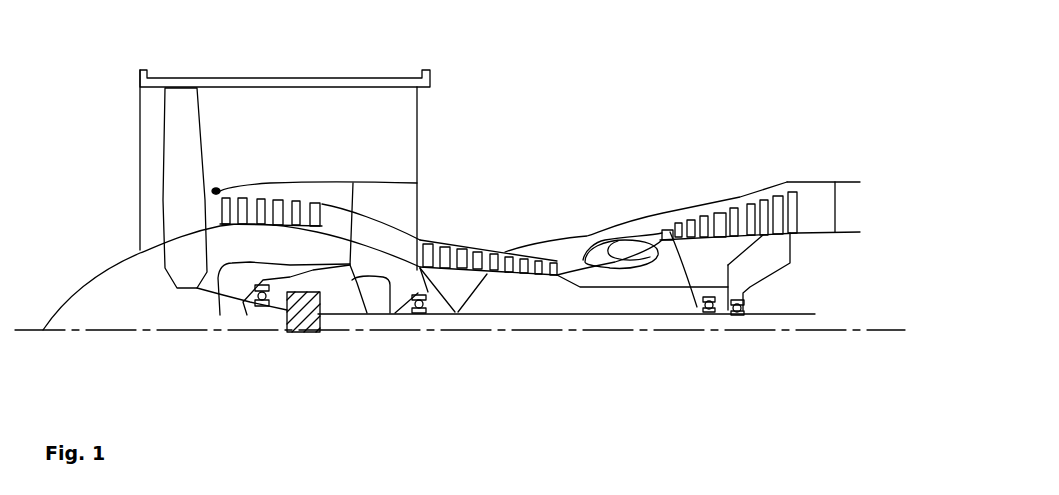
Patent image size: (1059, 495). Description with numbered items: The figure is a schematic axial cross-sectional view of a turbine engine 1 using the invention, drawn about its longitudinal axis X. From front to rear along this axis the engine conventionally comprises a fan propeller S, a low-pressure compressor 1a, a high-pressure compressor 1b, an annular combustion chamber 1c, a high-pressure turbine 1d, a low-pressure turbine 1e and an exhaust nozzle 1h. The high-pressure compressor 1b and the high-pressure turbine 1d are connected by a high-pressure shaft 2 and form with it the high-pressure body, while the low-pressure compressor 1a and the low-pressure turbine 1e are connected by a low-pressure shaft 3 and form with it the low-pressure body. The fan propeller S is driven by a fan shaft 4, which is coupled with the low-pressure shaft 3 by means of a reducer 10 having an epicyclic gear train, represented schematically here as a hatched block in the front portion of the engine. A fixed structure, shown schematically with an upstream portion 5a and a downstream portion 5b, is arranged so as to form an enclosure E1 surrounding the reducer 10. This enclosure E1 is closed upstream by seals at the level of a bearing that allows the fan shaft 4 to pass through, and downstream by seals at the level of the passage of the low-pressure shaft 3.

The turbine engine 1 is at (537, 157).
The low-pressure compressor 1a is at (240, 195).
The high-pressure compressor 1b is at (450, 245).
The annular combustion chamber 1c is at (617, 248).
The high-pressure turbine 1d is at (670, 228).
The low-pressure turbine 1e is at (790, 200).
The exhaust nozzle 1h is at (843, 202).
The fan propeller S is at (176, 140).
The axis X is at (27, 330).
The high-pressure shaft 2 is at (612, 287).
The low-pressure shaft 3 is at (518, 315).
The fan shaft 4 is at (247, 315).
The upstream portion 5a is at (220, 315).
The downstream portion 5b is at (387, 280).
The reducer 10 is at (297, 310).
The enclosure E1 is at (332, 280).